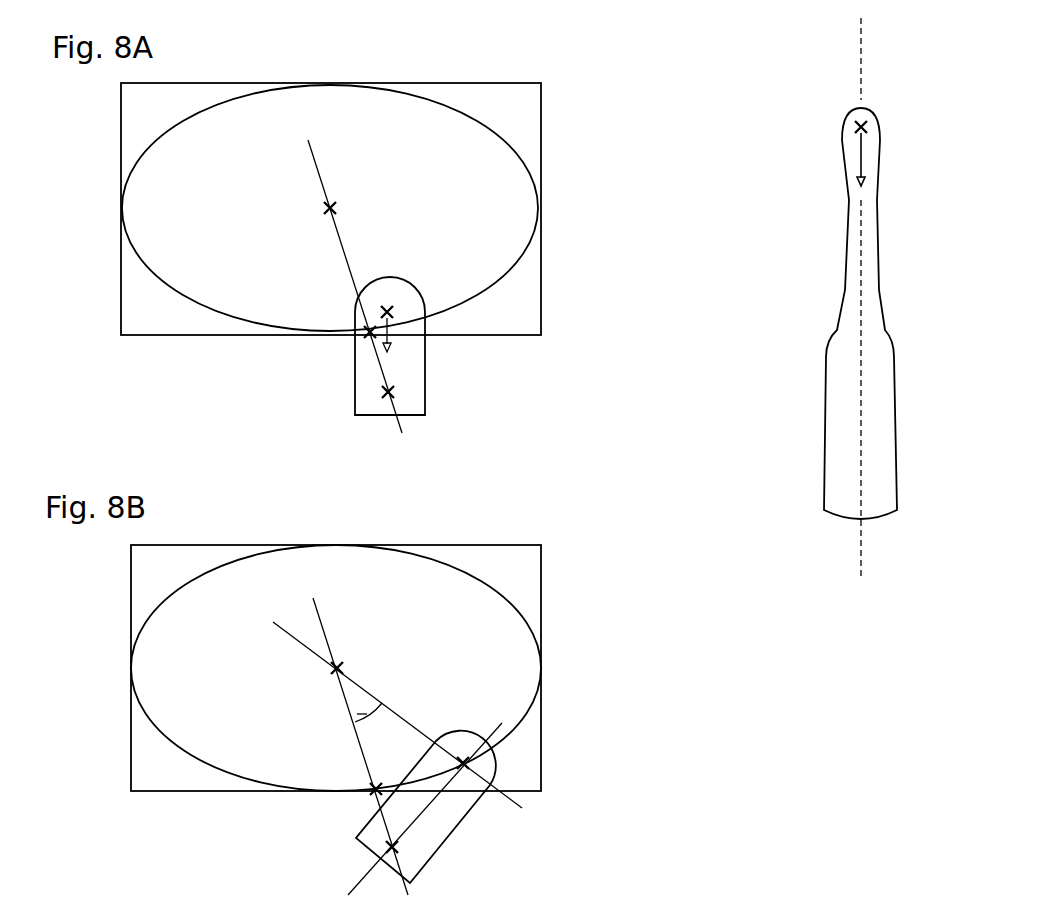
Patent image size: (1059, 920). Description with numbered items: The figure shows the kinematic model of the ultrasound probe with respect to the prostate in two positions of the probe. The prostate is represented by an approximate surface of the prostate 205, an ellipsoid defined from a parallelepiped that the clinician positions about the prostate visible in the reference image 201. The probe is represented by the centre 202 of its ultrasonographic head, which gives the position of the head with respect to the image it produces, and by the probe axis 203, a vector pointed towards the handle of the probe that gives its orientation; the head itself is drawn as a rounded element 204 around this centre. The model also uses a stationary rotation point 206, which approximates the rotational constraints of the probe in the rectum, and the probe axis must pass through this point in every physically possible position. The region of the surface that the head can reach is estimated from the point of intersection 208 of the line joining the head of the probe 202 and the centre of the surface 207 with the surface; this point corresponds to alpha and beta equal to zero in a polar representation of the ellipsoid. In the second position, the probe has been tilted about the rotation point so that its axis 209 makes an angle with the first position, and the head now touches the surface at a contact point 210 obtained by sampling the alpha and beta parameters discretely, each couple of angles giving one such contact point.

In FIG. 8A, the reference image 201 is at (543, 128).
In FIG. 8A, the centre of the ultrasonographic head 202 is at (853, 140).
In FIG. 8A, the probe axis 203 is at (855, 170).
In FIG. 8A, the instrument representation 204 is at (430, 377).
In FIG. 8A, the approximate surface of the prostate 205 is at (484, 124).
In FIG. 8A, the rotation point 206 is at (386, 395).
In FIG. 8A, the centre of the surface 207 is at (325, 213).
In FIG. 8A, the point of intersection 208 is at (368, 334).
In FIG. 8B, the instrument axis line 209 is at (468, 768).
In FIG. 8B, the contact point 210 is at (378, 691).